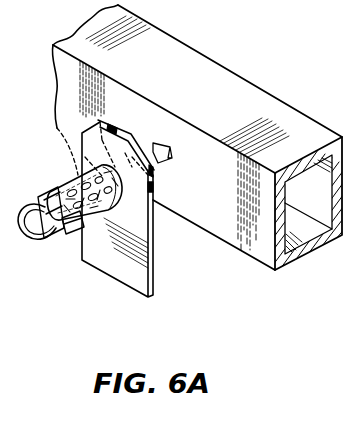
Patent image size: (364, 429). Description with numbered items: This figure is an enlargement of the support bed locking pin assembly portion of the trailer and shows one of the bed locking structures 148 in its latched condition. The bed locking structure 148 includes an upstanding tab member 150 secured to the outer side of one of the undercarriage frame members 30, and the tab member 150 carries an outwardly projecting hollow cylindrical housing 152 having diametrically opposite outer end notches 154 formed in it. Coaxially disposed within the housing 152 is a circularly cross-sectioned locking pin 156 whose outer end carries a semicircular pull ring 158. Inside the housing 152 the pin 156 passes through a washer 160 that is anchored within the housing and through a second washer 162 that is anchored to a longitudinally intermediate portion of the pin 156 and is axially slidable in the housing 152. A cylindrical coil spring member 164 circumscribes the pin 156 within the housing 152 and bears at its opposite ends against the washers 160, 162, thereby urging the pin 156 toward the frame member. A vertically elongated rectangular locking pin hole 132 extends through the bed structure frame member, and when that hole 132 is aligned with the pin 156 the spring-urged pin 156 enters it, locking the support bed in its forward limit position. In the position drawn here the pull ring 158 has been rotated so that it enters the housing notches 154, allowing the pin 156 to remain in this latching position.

The undercarriage frame member 30 is at (255, 85).
The locking pin hole 132 is at (152, 145).
The bed locking structure 148 is at (158, 197).
The upstanding tab member 150 is at (151, 279).
The hollow cylindrical housing 152 is at (110, 208).
The outer end notch 154 is at (42, 202).
The locking pin 156 is at (122, 133).
The semicircular pull ring 158 is at (38, 240).
The washer 160 is at (67, 192).
The washer 162 is at (116, 149).
The cylindrical coil spring member 164 is at (56, 126).